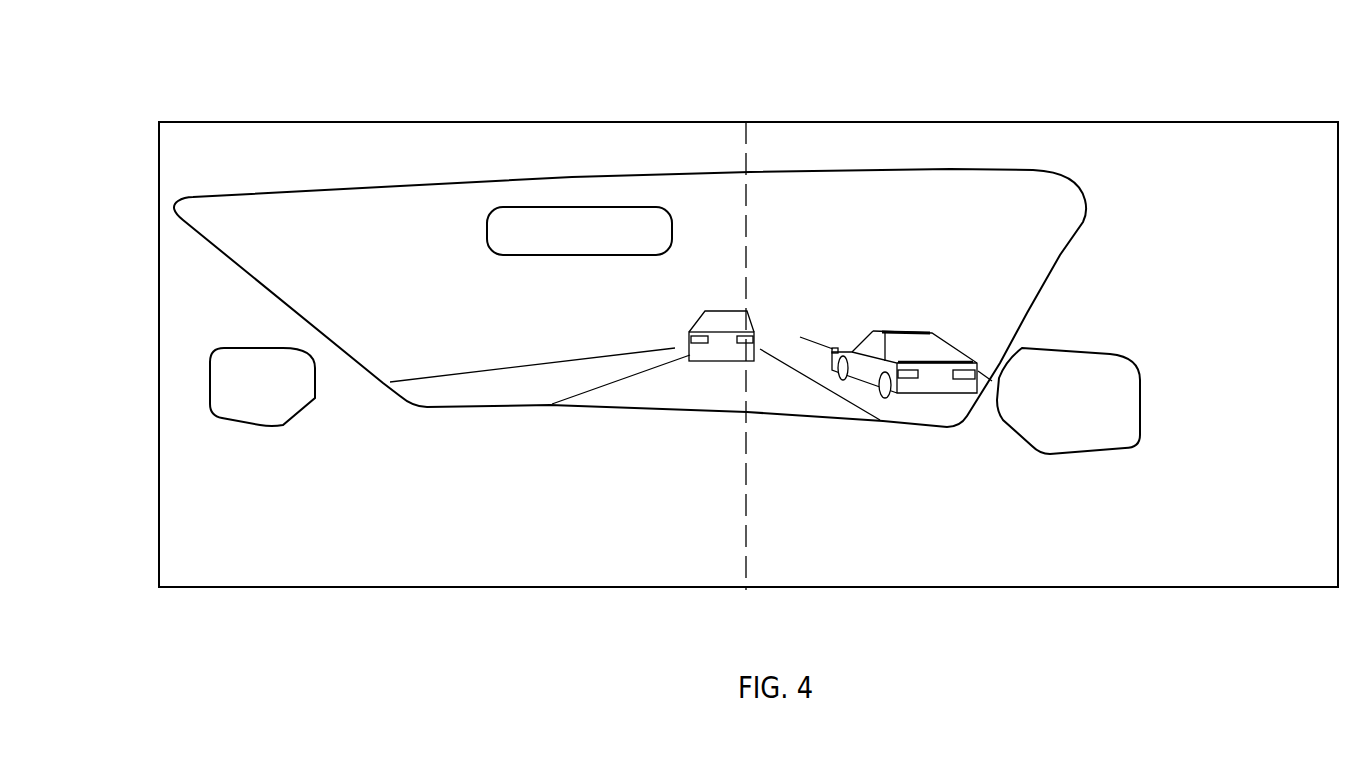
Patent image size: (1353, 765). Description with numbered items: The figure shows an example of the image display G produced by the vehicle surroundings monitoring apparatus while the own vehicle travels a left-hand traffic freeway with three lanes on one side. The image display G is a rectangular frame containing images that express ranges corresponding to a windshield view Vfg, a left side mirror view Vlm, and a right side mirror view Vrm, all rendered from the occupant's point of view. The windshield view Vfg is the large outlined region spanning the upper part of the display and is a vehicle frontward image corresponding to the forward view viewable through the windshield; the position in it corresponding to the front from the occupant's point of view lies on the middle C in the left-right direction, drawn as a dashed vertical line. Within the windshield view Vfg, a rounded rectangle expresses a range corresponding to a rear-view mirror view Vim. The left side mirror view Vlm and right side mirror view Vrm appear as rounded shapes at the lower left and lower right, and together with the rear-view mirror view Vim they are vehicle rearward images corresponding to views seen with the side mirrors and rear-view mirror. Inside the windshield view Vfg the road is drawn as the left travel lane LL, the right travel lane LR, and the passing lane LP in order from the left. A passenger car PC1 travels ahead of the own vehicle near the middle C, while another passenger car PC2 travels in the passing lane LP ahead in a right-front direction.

The image display G is at (205, 598).
The middle C is at (745, 374).
The windshield view Vfg is at (572, 177).
The rear-view mirror view Vim is at (632, 206).
The left side mirror view Vlm is at (210, 362).
The right side mirror view Vrm is at (1118, 357).
The left travel lane LL is at (487, 380).
The right travel lane LR is at (766, 378).
The passing lane LP is at (955, 407).
The passenger car PC1 is at (746, 316).
The passenger car PC2 is at (932, 333).